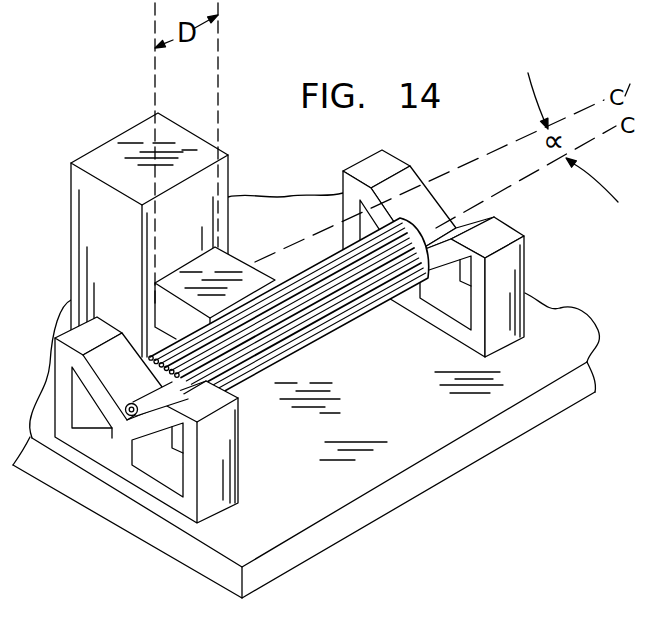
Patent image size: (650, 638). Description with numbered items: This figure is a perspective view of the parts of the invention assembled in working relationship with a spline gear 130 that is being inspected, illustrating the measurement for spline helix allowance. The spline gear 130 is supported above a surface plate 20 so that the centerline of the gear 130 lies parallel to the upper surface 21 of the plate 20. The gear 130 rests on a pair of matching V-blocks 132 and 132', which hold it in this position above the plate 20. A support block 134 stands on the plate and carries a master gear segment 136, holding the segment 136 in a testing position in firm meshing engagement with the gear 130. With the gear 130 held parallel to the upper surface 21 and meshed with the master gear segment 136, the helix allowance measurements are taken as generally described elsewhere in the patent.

The surface plate 20 is at (357, 515).
The upper surface 21 is at (265, 530).
The spline gear 130 is at (347, 320).
The V-block 132 is at (185, 420).
The V-block 132' is at (493, 253).
The support block 134 is at (137, 142).
The master gear segment 136 is at (165, 312).